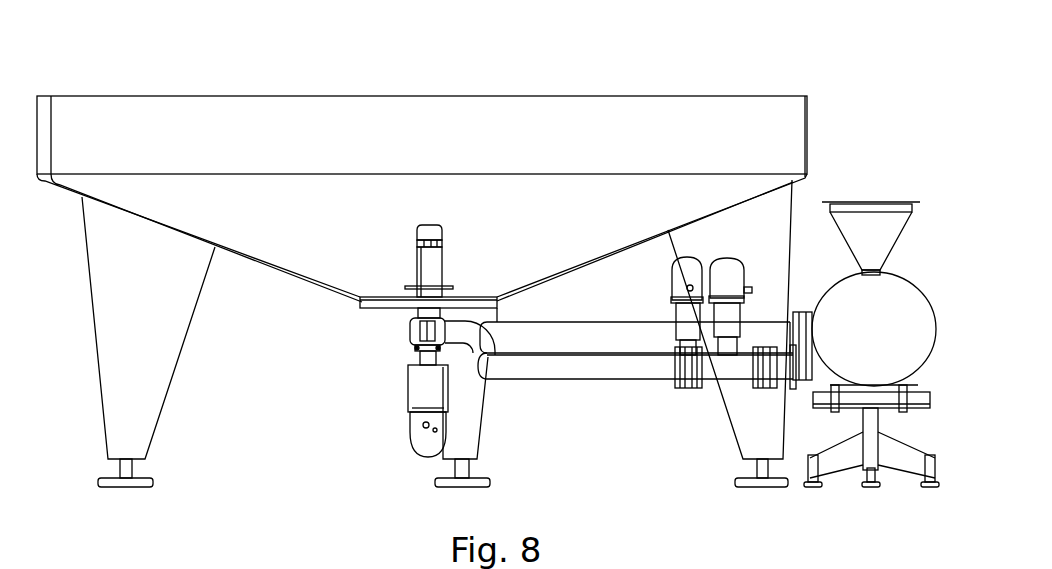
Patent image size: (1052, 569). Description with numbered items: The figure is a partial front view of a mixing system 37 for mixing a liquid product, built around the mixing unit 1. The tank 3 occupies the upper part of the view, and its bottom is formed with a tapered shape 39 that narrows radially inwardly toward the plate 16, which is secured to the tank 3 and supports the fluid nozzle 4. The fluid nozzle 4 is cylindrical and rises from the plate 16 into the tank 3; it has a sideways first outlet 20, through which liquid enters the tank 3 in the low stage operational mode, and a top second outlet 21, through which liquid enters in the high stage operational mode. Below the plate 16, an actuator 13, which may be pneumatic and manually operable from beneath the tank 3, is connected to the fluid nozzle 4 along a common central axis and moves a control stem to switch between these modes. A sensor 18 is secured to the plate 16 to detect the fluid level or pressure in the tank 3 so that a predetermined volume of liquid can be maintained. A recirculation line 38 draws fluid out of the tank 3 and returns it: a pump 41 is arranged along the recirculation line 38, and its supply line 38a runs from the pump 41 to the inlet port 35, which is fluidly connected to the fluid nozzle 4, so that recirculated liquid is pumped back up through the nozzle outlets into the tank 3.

The mixing system 37 is at (593, 76).
The tank 3 is at (676, 100).
The mixing unit 1 is at (476, 229).
The top second outlet 21 is at (417, 232).
The sideways first outlet 20 is at (417, 245).
The fluid nozzle 4 is at (430, 275).
The tapered shape 39 is at (308, 282).
The plate 16 is at (370, 306).
The inlet port 35 is at (410, 334).
The sensor 18 is at (413, 352).
The actuator 13 is at (408, 433).
The recirculation line 38 is at (553, 327).
The supply line 38a is at (604, 380).
The pump 41 is at (905, 300).